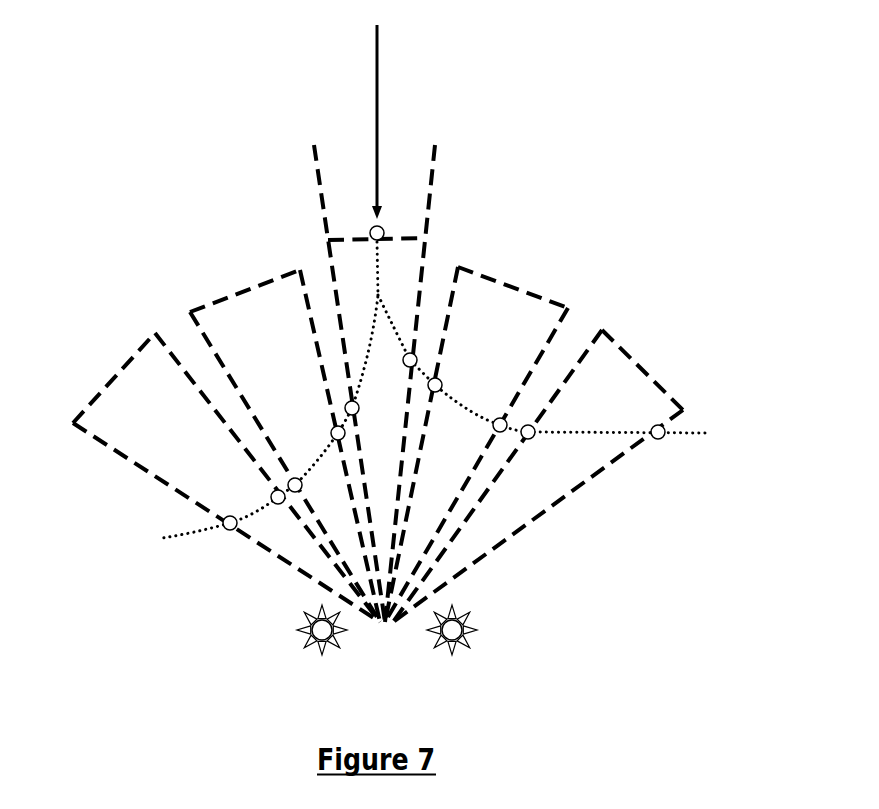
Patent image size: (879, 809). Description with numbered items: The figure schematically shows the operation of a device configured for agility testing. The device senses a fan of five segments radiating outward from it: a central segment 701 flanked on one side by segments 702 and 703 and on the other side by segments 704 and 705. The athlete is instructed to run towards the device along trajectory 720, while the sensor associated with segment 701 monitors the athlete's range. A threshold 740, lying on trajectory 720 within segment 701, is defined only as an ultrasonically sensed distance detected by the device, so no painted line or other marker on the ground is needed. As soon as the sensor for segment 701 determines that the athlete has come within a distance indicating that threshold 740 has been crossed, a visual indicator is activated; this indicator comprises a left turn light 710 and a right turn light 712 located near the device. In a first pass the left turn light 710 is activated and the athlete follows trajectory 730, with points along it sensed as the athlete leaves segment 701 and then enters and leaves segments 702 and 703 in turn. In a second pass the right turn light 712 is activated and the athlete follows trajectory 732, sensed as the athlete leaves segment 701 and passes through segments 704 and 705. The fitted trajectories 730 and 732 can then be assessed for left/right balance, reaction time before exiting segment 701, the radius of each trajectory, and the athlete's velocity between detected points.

The segment 701 is at (355, 175).
The segment 702 is at (497, 323).
The segment 703 is at (616, 397).
The segment 704 is at (260, 331).
The segment 705 is at (162, 408).
The left turn light 710 is at (482, 645).
The right turn light 712 is at (296, 646).
The trajectory 720 is at (381, 69).
The trajectory 730 is at (697, 440).
The trajectory 732 is at (175, 542).
The threshold 740 is at (410, 233).